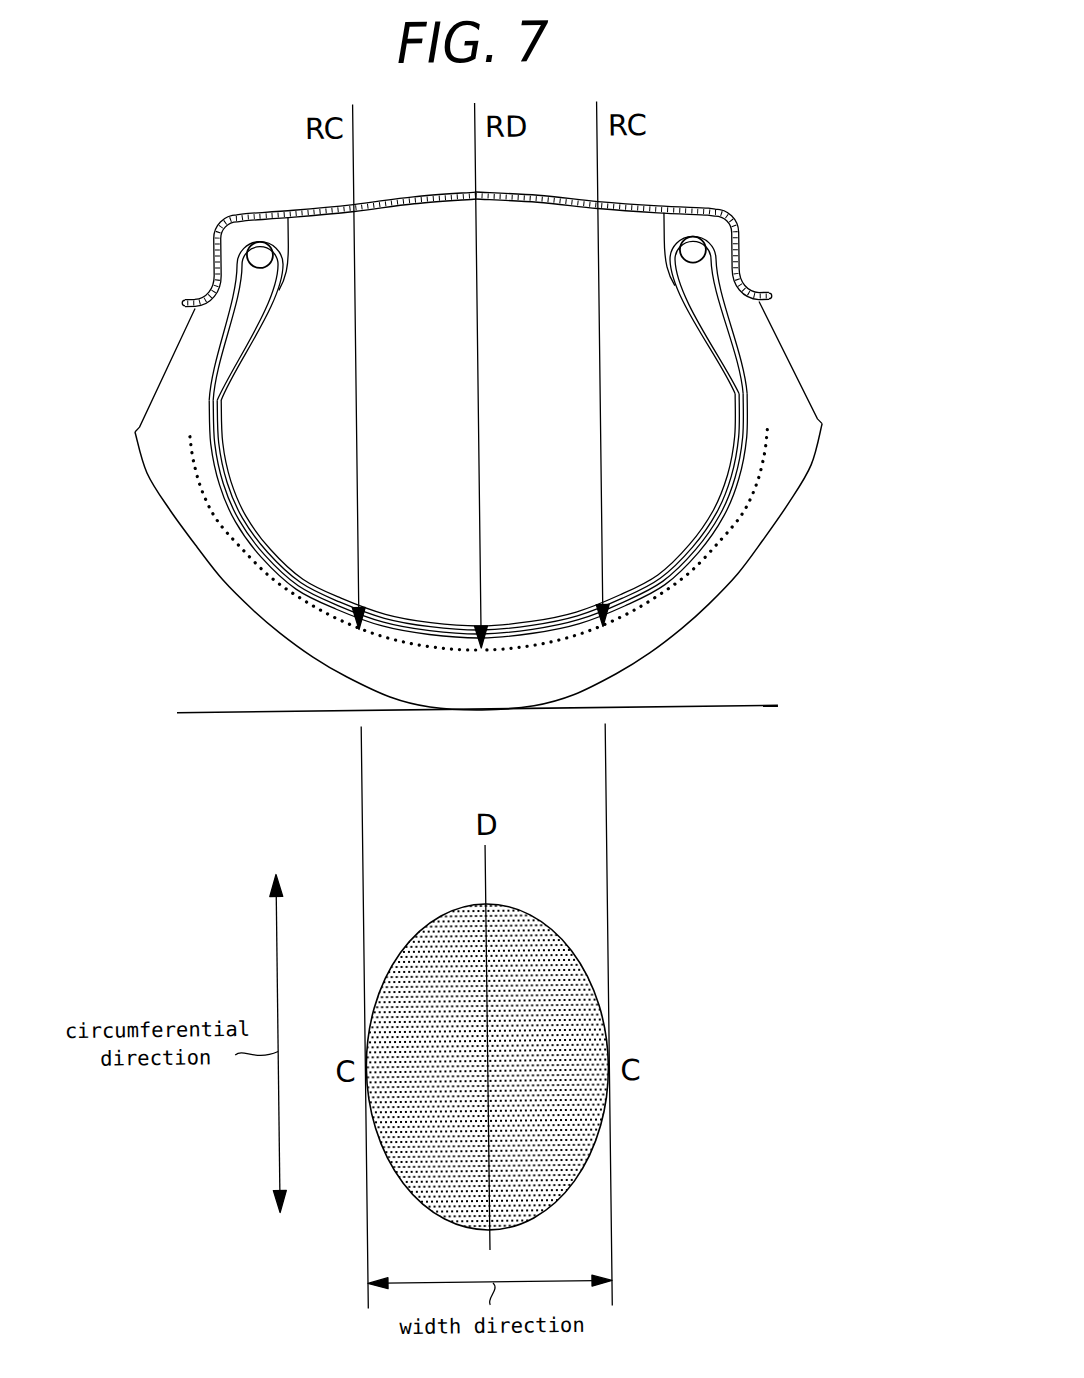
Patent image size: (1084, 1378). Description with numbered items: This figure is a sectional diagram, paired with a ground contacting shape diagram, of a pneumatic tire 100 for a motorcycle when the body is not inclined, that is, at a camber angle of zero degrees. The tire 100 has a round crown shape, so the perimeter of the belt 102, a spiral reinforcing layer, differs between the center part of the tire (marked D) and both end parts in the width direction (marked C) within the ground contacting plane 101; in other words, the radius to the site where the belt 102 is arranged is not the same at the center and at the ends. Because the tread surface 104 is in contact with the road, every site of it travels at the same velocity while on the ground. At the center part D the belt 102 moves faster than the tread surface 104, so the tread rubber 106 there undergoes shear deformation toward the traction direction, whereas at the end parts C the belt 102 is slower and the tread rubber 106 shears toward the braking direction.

The tire for a motorcycle 100 is at (806, 399).
The ground contacting plane 101 is at (557, 965).
The belt 102 is at (666, 593).
The tread surface 104 is at (773, 537).
The tread rubber 106 is at (297, 625).